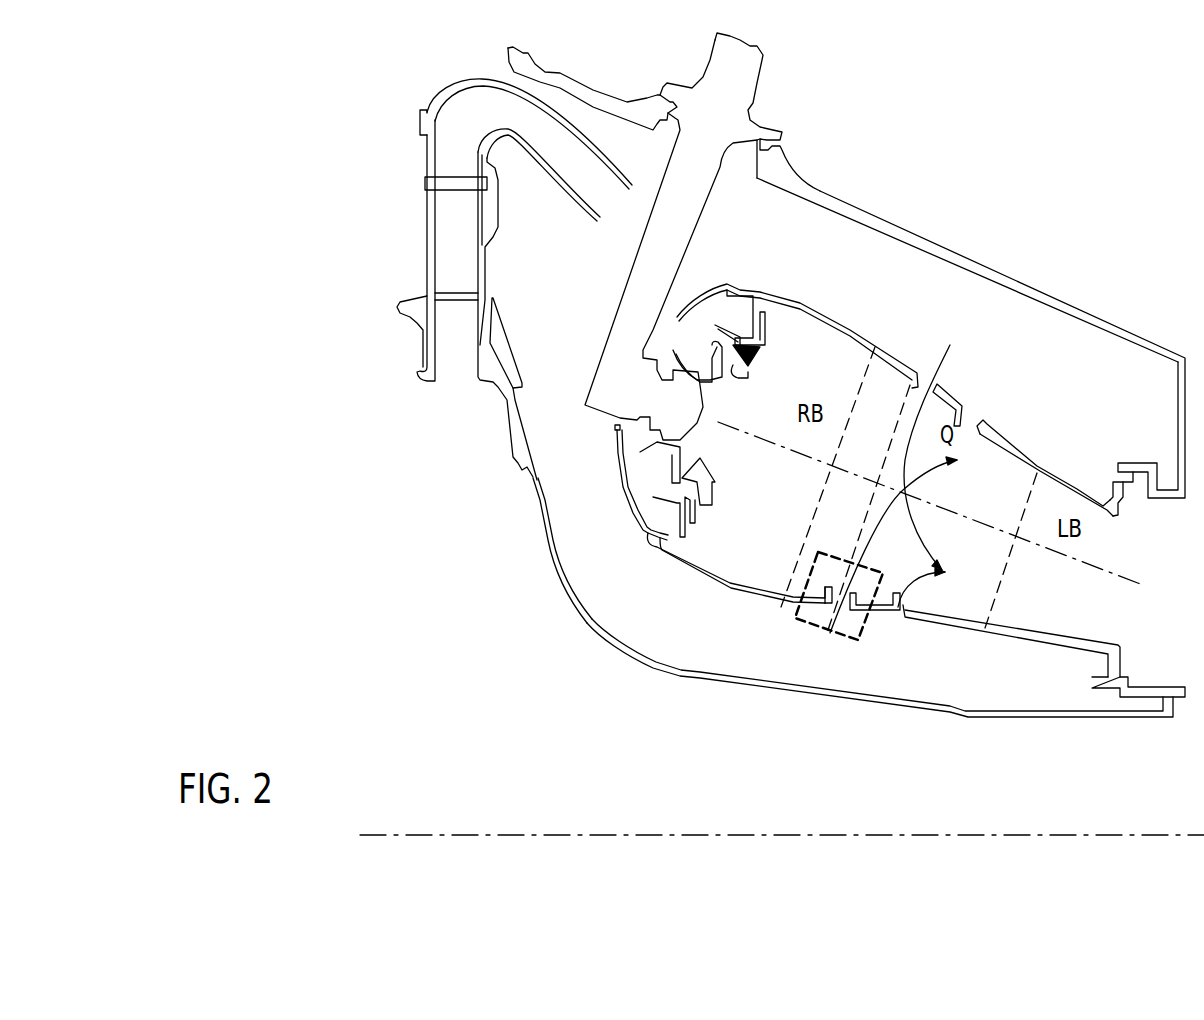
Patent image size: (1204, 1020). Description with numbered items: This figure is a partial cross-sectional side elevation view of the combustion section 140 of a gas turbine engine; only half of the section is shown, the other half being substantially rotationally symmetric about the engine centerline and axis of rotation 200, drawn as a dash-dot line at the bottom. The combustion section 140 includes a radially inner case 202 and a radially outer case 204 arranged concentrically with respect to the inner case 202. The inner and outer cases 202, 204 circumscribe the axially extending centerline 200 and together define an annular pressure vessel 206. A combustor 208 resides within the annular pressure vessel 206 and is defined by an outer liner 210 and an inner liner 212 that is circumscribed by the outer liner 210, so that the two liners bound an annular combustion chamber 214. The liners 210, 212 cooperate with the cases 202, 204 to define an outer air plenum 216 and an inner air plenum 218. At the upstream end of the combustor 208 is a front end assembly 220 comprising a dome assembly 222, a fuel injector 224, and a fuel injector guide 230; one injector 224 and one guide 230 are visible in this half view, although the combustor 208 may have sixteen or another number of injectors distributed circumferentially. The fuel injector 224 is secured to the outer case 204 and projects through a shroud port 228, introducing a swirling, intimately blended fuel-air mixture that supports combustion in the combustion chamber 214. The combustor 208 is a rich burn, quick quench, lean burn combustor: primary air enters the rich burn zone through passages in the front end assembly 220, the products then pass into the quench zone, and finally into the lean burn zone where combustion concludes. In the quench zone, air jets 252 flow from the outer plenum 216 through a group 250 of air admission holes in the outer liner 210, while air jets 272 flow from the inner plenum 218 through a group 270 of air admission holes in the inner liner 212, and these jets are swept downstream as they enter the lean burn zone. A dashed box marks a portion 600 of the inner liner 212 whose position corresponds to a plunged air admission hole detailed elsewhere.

The combustion section 140 is at (352, 143).
The centerline and axis of rotation 200 is at (410, 830).
The radially inner case 202 is at (703, 685).
The radially outer case 204 is at (935, 220).
The annular pressure vessel 206 is at (597, 633).
The combustor 208 is at (725, 598).
The outer liner 210 is at (808, 278).
The inner liner 212 is at (800, 605).
The annular combustion chamber 214 is at (817, 361).
The outer air plenum 216 is at (948, 311).
The inner air plenum 218 is at (963, 694).
The front end assembly 220 is at (600, 302).
The dome assembly 222 is at (615, 472).
The fuel injector 224 is at (598, 350).
The shroud port 228 is at (612, 424).
The fuel injector guide 230 is at (668, 458).
The group of air admission holes in the outer liner 250 is at (940, 388).
The air jets 252 is at (915, 418).
The group of air admission holes in the inner liner 270 is at (865, 611).
The air jets 272 is at (850, 528).
The portion 600 is at (812, 625).